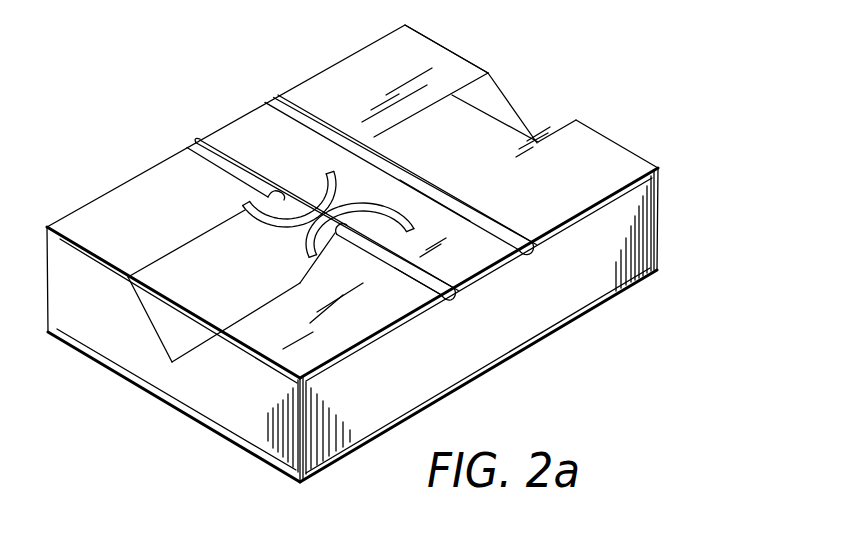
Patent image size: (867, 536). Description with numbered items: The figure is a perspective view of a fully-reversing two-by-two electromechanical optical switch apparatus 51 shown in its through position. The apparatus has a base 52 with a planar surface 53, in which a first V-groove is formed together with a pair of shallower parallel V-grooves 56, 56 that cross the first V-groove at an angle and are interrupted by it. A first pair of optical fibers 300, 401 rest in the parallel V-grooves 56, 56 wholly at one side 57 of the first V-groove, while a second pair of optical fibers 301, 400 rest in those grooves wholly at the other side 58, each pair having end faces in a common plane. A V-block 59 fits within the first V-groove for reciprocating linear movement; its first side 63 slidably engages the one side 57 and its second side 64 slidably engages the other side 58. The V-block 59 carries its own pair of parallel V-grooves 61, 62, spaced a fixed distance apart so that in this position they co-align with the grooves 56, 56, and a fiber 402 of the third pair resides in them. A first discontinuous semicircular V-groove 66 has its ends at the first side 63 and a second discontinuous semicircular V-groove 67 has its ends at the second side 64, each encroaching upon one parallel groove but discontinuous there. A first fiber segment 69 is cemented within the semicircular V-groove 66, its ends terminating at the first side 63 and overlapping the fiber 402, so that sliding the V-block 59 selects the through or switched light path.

The electromechanical optical switch apparatus 51 is at (188, 91).
The base 52 is at (232, 410).
The planar surface 53 is at (272, 338).
The parallel V-grooves 56 is at (454, 304).
The one side of the first V-groove 57 is at (444, 47).
The other side of the first V-groove 58 is at (611, 140).
The V-block 59 is at (496, 138).
The parallel V-groove of the V-block 61 is at (437, 183).
The parallel V-groove of the V-block 62 is at (268, 196).
The first side of the V-block 63 is at (425, 104).
The second side of the V-block 64 is at (256, 311).
The first discontinuous semicircular V-groove 66 is at (260, 224).
The second discontinuous semicircular V-groove 67 is at (316, 256).
The first fiber segment 69 is at (321, 171).
The input optical fiber 300 is at (278, 96).
The output optical fiber 301 is at (391, 172).
The input optical fiber 400 is at (432, 283).
The output optical fiber 401 is at (200, 140).
The optical fiber of the third pair 402 is at (378, 237).